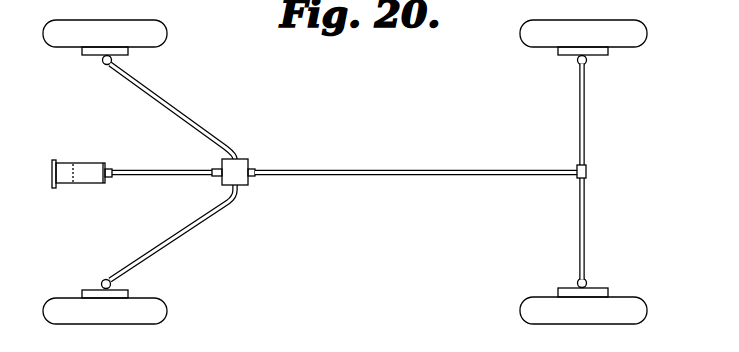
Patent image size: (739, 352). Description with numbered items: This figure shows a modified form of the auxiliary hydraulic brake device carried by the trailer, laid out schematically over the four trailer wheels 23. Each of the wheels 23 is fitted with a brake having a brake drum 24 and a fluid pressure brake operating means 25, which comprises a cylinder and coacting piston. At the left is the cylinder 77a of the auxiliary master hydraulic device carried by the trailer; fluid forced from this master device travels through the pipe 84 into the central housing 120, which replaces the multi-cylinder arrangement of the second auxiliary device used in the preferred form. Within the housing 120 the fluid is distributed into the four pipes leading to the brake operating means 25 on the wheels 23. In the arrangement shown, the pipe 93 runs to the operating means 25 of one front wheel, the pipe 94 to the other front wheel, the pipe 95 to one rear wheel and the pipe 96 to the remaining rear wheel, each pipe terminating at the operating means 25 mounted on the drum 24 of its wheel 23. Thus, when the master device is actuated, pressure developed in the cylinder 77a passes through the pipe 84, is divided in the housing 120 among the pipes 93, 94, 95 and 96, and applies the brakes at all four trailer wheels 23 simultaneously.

The wheels 23 is at (158, 28).
The brake drums 24 is at (83, 55).
The fluid pressure brake operating means 25 is at (107, 66).
The pipe 93 is at (586, 107).
The pipe 94 is at (186, 119).
The pipe 95 is at (186, 232).
The pipe 96 is at (586, 235).
The pipe 84 is at (154, 176).
The housing 120 is at (247, 162).
The cylinder 77a is at (77, 187).